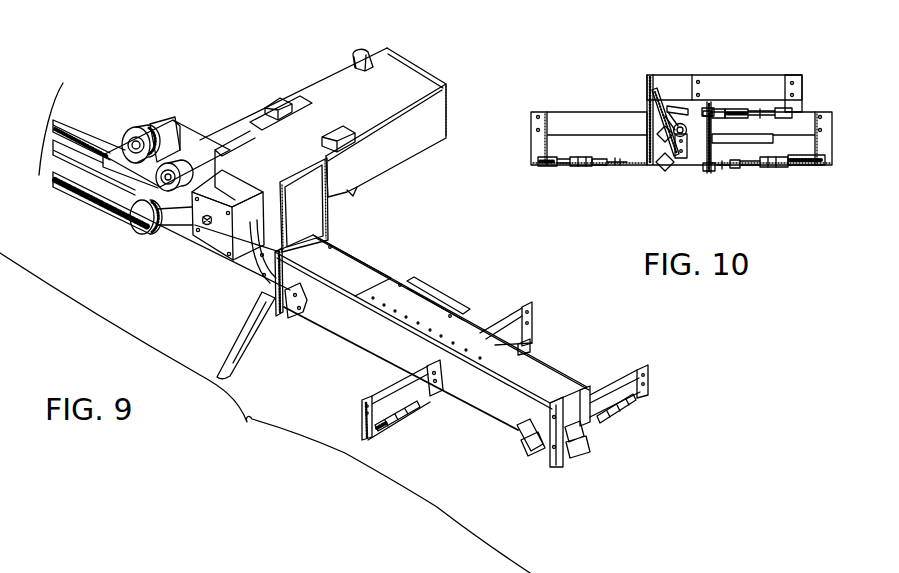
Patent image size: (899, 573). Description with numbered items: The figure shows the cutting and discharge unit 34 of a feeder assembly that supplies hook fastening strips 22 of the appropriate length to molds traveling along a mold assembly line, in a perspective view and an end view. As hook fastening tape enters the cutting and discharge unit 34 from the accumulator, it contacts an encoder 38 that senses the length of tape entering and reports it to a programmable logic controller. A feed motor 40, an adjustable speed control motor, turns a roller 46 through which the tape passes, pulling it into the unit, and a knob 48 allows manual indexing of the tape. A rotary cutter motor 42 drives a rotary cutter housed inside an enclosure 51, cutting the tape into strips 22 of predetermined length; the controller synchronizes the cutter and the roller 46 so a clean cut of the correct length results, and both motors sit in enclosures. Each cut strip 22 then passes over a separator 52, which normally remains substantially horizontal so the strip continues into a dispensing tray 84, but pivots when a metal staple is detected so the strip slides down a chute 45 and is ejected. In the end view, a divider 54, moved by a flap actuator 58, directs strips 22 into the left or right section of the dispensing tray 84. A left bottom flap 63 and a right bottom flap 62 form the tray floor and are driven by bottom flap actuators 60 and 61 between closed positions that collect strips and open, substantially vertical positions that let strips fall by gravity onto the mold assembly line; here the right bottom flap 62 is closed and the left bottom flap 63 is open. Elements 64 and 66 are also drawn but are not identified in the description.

In FIG. 9, the hook fastening strips 22 is at (282, 235).
In FIG. 10, the hook fastening strips 22 is at (698, 178).
In FIG. 9, the cutting and discharge unit 34 is at (265, 413).
In FIG. 9, the encoder 38 is at (133, 127).
In FIG. 9, the feed motor 40 is at (270, 103).
In FIG. 9, the rotary cutter motor 42 is at (408, 68).
In FIG. 9, the chute 45 is at (233, 357).
In FIG. 9, the roller 46 is at (175, 160).
In FIG. 9, the knob 48 is at (143, 230).
In FIG. 9, the enclosure 51 is at (217, 245).
In FIG. 9, the separator 52 is at (267, 297).
In FIG. 10, the divider 54 is at (666, 108).
In FIG. 9, the flap actuator 58 is at (632, 403).
In FIG. 10, the flap actuator 58 is at (762, 111).
In FIG. 9, the bottom flap actuator 60 is at (390, 428).
In FIG. 10, the bottom flap actuator 60 is at (585, 170).
In FIG. 9, the bottom flap actuator 61 is at (533, 343).
In FIG. 10, the bottom flap actuator 61 is at (790, 168).
In FIG. 10, the right bottom flap 62 is at (652, 172).
In FIG. 10, the left bottom flap 63 is at (708, 176).
In FIG. 9, the drawbar 64 is at (356, 328).
In FIG. 10, the plate 66 is at (653, 120).
In FIG. 9, the dispensing tray 84 is at (423, 252).